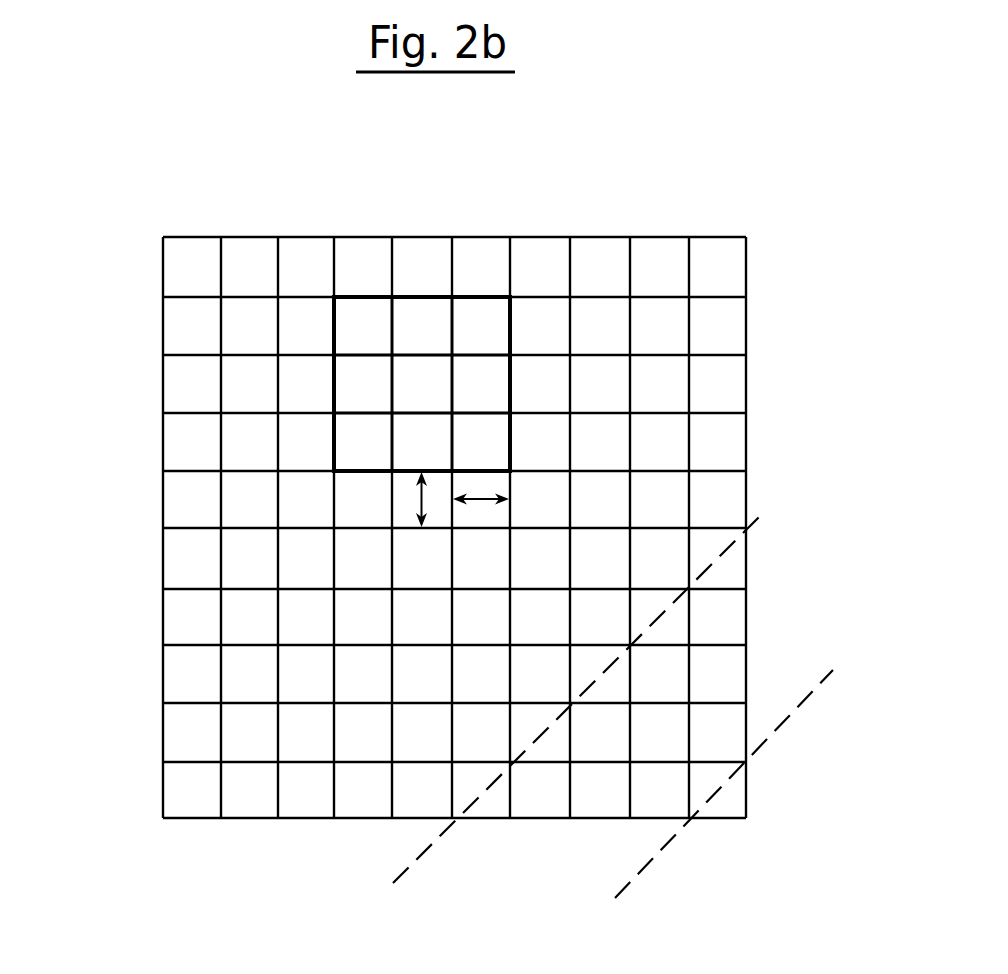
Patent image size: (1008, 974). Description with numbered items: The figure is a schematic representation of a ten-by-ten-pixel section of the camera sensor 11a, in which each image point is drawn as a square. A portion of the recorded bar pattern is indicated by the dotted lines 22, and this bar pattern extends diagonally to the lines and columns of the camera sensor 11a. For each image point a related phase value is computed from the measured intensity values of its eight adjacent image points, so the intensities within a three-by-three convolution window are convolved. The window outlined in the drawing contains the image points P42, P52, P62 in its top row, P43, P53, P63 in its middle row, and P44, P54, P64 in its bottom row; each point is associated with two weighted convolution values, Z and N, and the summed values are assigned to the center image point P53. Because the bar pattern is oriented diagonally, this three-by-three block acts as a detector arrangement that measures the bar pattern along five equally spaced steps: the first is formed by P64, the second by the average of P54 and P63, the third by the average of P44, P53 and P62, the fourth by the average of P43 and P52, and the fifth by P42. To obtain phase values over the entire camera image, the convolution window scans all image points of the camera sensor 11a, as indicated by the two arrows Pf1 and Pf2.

The camera sensor 11a is at (756, 275).
The image point P42 is at (365, 313).
The image point P52 is at (420, 318).
The image point P62 is at (478, 312).
The image point P43 is at (356, 387).
The image point P53 is at (424, 378).
The image point P63 is at (498, 390).
The image point P44 is at (350, 445).
The image point P54 is at (412, 450).
The image point P64 is at (483, 455).
The arrow Pf1 is at (477, 502).
The arrow Pf2 is at (417, 500).
The dotted lines 22 is at (628, 880).